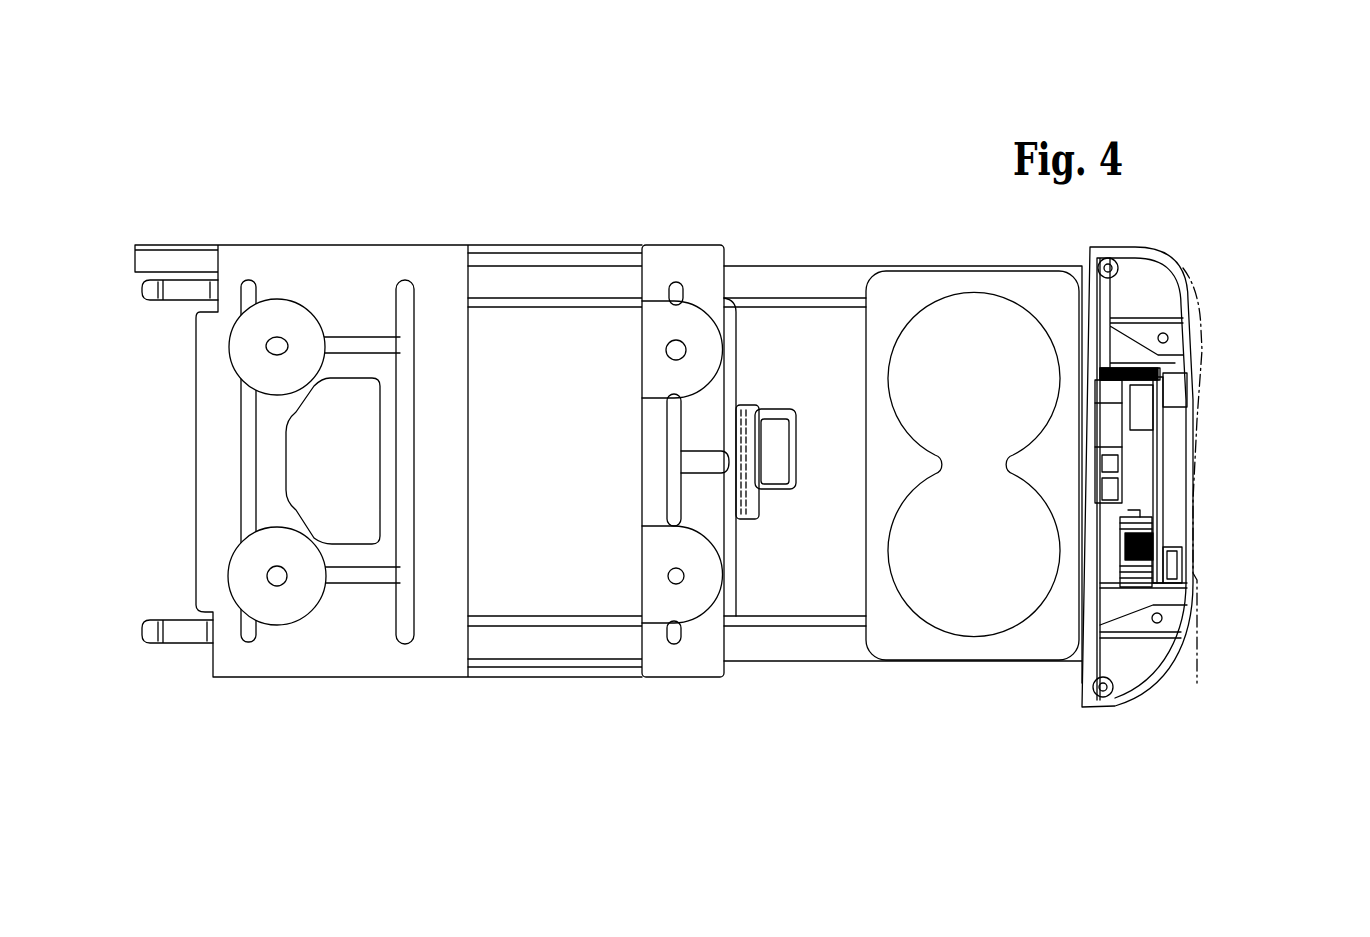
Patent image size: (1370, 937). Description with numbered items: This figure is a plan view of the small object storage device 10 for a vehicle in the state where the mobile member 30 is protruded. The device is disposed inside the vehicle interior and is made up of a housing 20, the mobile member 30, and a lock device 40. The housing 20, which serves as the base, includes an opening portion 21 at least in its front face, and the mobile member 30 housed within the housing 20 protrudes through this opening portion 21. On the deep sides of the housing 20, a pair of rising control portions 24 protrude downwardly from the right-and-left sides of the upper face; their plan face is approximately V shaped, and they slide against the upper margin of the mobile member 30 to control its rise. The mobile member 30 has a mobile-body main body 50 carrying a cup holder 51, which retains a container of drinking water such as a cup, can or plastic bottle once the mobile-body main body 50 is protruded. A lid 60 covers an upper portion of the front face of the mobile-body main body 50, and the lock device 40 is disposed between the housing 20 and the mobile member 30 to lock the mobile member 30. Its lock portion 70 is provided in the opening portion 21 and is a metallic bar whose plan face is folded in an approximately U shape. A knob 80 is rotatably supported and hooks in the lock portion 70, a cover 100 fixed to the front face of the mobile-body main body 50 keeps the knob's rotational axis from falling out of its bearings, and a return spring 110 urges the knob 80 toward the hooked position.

The small object storage device 10 is at (267, 98).
The housing 20 is at (443, 262).
The opening portion 21 is at (743, 553).
The rising control portions 24 is at (140, 287).
The mobile member 30 is at (973, 758).
The lock device 40 is at (1253, 437).
The mobile-body main body 50 is at (808, 655).
The cup holder 51 is at (995, 323).
The lid 60 is at (1183, 268).
The lock portion 70 is at (773, 439).
The knob 80 is at (1138, 457).
The cover 100 is at (1158, 493).
The return spring 110 is at (1153, 555).